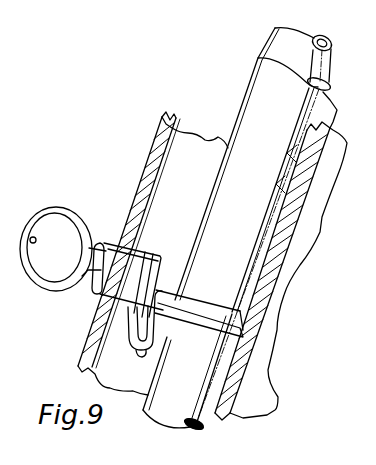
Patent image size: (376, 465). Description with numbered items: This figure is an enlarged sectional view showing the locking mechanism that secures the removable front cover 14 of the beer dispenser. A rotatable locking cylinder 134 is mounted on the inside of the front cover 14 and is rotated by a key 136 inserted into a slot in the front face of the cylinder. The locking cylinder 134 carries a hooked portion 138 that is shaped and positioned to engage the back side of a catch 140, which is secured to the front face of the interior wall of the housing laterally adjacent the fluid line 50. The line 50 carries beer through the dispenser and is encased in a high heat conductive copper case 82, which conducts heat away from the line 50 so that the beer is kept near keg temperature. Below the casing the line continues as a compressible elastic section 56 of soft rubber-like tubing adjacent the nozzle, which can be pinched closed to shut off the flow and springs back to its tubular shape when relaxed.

The front cover 14 is at (141, 173).
The line 50 is at (332, 58).
The compressible elastic section 56 is at (176, 410).
The copper case 82 is at (240, 112).
The locking cylinder 134 is at (141, 251).
The key 136 is at (70, 207).
The hooked portion 138 is at (149, 354).
The catch 140 is at (203, 309).